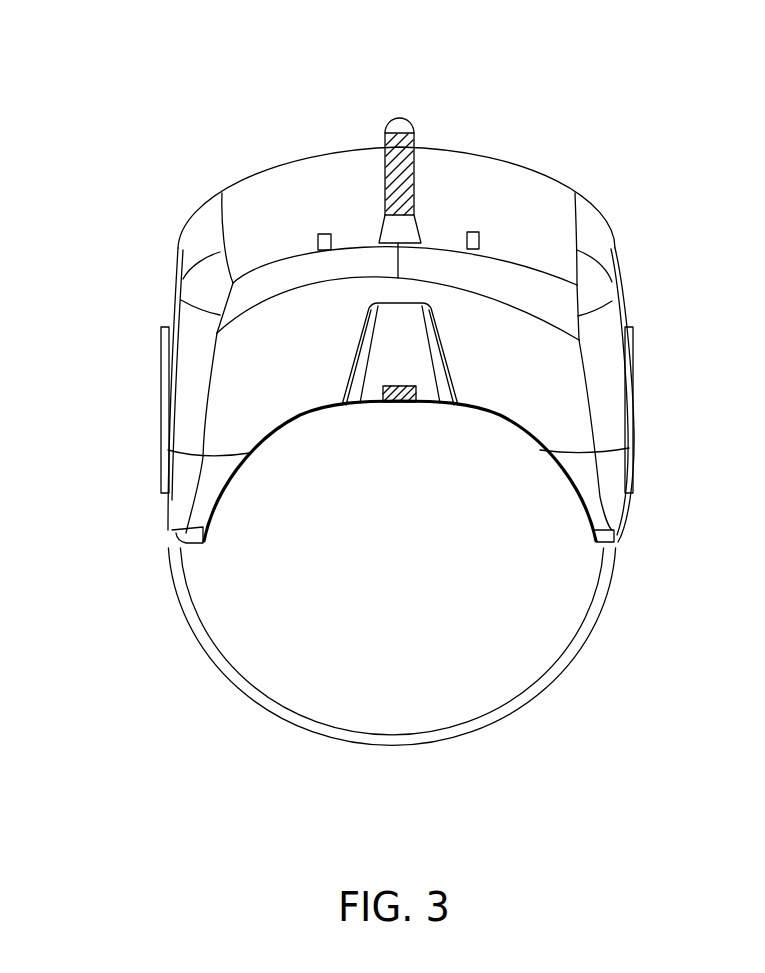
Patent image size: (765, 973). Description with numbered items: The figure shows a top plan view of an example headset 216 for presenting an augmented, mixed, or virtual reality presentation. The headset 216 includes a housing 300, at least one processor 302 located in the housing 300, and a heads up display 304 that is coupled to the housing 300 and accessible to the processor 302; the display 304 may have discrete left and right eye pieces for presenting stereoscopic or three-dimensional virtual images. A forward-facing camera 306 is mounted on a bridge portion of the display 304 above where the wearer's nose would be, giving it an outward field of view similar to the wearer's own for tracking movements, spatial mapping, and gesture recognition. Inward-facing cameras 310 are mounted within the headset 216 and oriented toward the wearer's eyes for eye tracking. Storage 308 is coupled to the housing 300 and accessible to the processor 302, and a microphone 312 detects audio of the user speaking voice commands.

The headset 216 is at (151, 61).
The housing 300 is at (602, 607).
The processor 302 is at (283, 300).
The heads up display 304 is at (298, 164).
The forward-facing camera 306 is at (415, 117).
The storage 308 is at (493, 295).
The inward-facing cameras 310 is at (318, 233).
The microphone 312 is at (402, 408).